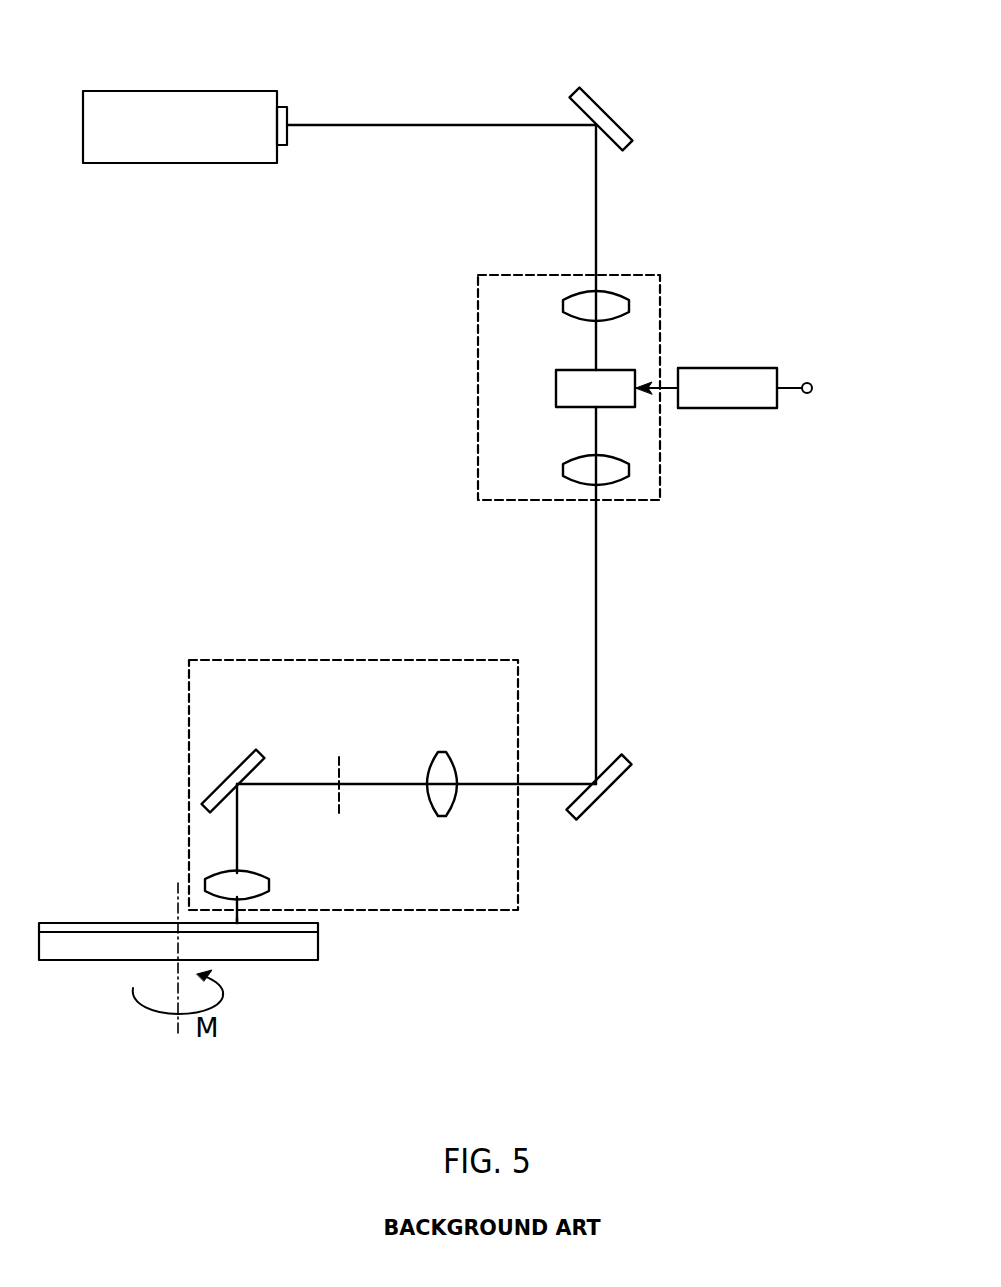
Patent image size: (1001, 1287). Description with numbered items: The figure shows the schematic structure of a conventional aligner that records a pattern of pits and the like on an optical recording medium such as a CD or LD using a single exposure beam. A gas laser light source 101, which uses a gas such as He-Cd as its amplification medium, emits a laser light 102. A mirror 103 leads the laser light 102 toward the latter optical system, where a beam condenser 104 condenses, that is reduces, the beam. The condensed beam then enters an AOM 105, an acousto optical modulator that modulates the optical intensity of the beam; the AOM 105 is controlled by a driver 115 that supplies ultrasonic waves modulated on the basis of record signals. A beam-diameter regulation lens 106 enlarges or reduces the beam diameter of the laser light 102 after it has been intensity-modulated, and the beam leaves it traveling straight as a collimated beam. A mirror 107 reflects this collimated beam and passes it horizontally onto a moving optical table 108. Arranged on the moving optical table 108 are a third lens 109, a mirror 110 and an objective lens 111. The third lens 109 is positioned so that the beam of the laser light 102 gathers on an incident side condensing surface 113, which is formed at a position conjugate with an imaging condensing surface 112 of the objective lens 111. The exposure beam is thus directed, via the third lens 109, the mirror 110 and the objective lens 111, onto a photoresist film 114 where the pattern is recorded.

The gas laser light source 101 is at (265, 90).
The laser light 102 is at (412, 122).
The mirror 103 is at (607, 96).
The beam condenser 104 is at (561, 304).
The AOM (Acousto Optical Modulator) 105 is at (556, 389).
The beam-diameter regulation lens 106 is at (561, 466).
The mirror 107 is at (590, 811).
The moving optical table 108 is at (247, 659).
The third lens 109 is at (442, 817).
The mirror 110 is at (240, 752).
The objective lens 111 is at (257, 872).
The imaging condensing surface 112 is at (240, 922).
The incident side condensing surface 113 is at (352, 762).
The photoresist film 114 is at (310, 927).
The driver 115 is at (754, 367).